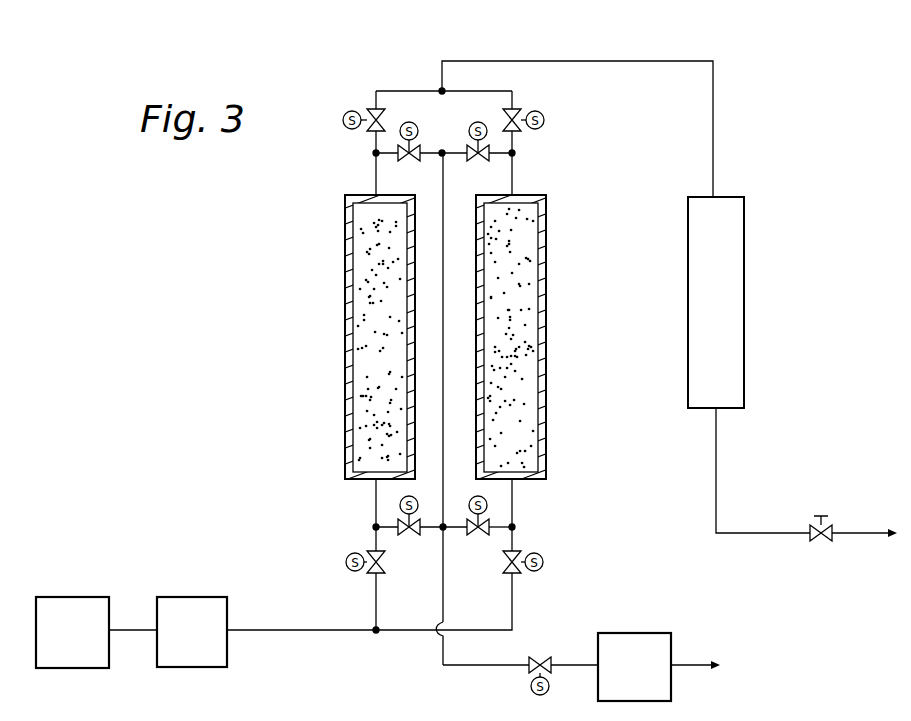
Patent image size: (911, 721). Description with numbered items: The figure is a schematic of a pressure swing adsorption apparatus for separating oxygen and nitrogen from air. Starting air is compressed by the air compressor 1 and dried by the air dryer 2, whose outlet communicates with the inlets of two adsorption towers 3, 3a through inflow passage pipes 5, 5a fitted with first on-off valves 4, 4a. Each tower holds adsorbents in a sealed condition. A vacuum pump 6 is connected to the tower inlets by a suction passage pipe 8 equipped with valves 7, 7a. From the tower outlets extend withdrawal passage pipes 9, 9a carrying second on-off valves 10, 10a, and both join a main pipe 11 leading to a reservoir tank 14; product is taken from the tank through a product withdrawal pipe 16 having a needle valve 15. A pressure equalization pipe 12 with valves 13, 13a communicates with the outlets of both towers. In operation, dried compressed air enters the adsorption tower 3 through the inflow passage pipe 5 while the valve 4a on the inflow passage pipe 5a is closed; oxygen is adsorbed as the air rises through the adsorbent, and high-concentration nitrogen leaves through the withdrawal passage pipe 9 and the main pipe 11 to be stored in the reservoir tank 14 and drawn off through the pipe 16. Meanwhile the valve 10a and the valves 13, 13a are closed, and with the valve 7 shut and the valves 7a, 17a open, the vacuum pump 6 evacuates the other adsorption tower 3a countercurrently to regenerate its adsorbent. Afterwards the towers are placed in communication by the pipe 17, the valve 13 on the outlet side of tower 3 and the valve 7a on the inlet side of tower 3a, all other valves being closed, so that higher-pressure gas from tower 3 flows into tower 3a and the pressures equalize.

The air compressor 1 is at (73, 605).
The air dryer 2 is at (192, 607).
The adsorption tower 3 is at (348, 373).
The adsorption tower 3a is at (545, 372).
The first on-off valve 4 is at (386, 567).
The first on-off valve 4a is at (520, 571).
The inflow passage pipe 5 is at (376, 603).
The inflow passage pipe 5a is at (482, 631).
The vacuum pump 6 is at (640, 635).
The valve 7 is at (409, 536).
The valve 7a is at (478, 536).
The suction passage pipe 8 is at (445, 598).
The withdrawal passage pipe 9 is at (374, 173).
The withdrawal passage pipe 9a is at (514, 175).
The second on-off valve 10 is at (370, 112).
The second on-off valve 10a is at (518, 112).
The main pipe 11 is at (648, 60).
The pressure equalization pipe 12 is at (431, 152).
The valve 13 is at (410, 160).
The valve 13a is at (480, 160).
The reservoir tank 14 is at (742, 327).
The needle valve 15 is at (823, 542).
The product withdrawal pipe 16 is at (865, 532).
The pipe 17 is at (443, 330).
The valve 17a is at (533, 675).